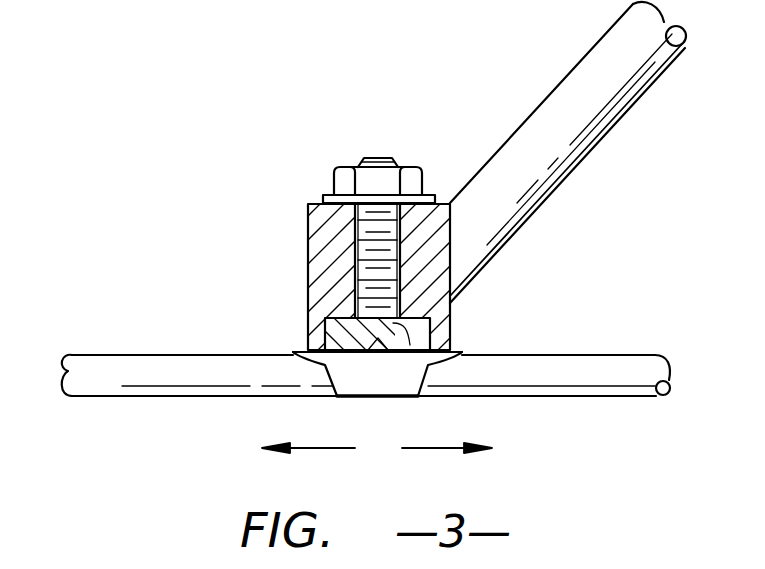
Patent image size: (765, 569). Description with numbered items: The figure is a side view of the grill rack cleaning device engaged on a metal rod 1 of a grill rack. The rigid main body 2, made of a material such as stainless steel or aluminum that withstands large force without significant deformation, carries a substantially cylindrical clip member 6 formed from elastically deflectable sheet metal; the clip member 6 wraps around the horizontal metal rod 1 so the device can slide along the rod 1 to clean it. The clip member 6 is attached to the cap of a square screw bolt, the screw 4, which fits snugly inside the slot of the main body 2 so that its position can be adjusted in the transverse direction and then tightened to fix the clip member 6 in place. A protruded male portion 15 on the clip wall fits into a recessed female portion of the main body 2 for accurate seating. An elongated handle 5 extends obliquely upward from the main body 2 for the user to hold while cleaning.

The rail tube 1 is at (583, 355).
The rigid main body 2 is at (308, 227).
The screw 4 is at (415, 330).
The elongated handle 5 is at (533, 113).
The clip member 6 is at (303, 350).
The protruded male portion 15 is at (378, 348).